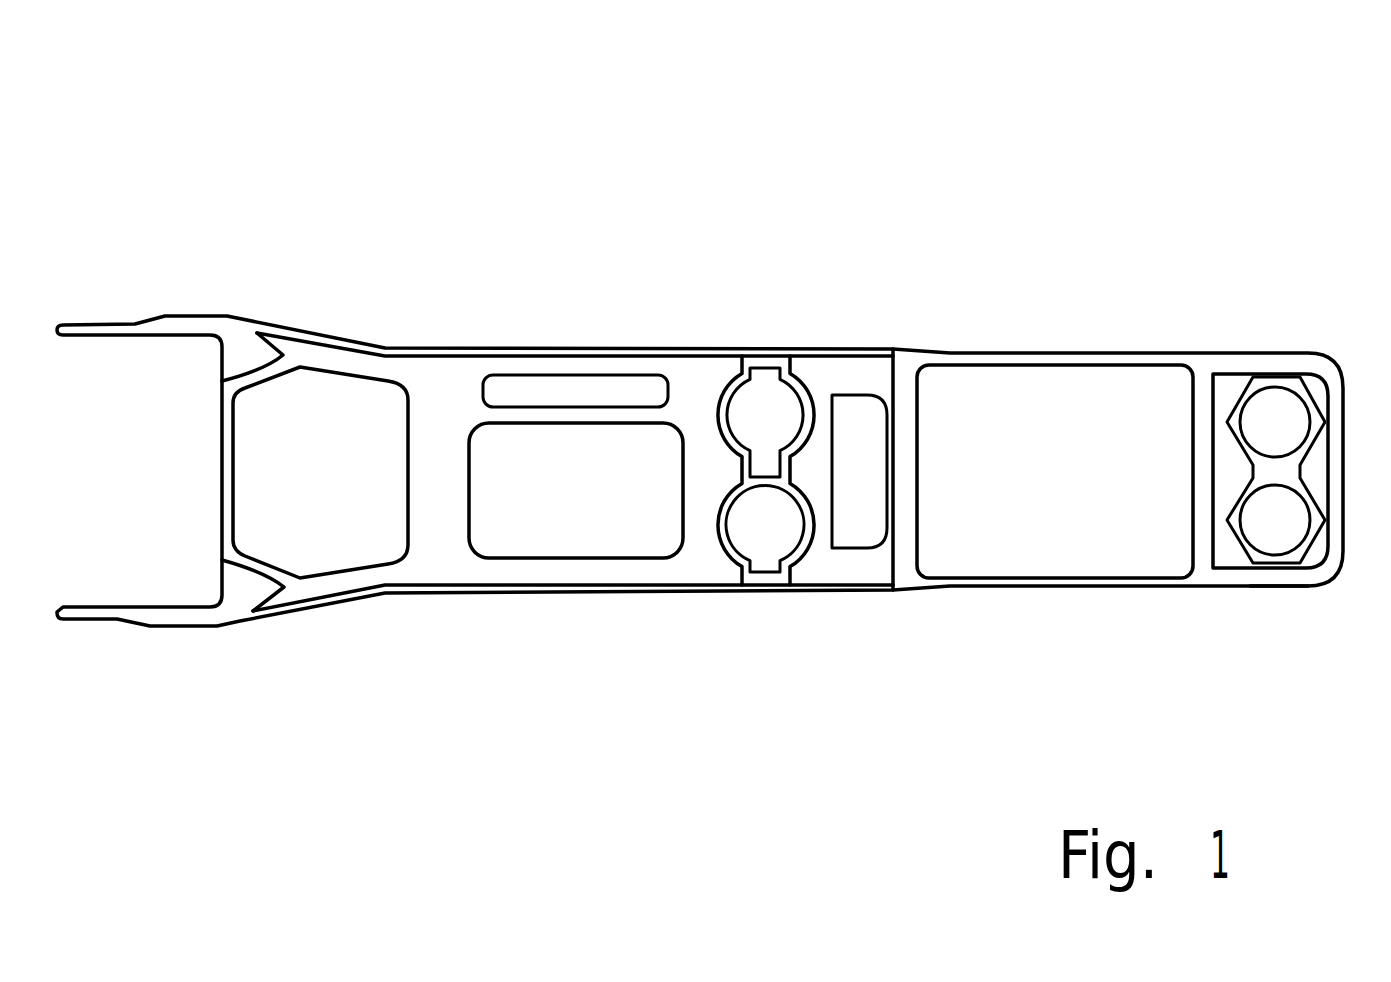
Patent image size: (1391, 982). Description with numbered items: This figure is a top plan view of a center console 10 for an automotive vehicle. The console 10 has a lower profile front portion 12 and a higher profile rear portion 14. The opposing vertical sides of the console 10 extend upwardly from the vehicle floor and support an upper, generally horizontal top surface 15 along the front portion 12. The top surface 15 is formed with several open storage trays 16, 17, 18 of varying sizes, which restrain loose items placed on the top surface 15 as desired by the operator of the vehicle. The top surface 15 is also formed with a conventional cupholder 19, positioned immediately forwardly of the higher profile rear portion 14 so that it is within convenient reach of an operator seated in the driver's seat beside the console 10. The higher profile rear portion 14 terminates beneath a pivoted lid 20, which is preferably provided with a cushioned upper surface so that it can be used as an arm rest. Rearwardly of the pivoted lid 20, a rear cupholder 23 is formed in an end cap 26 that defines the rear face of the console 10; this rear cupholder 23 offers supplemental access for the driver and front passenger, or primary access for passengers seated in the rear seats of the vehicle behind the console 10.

The center console 10 is at (1035, 178).
The front portion 12 is at (440, 636).
The rear portion 14 is at (1014, 636).
The top surface 15 is at (436, 380).
The storage tray 16 is at (325, 400).
The storage tray 17 is at (598, 552).
The storage tray 18 is at (602, 382).
The cupholder 19 is at (763, 338).
The pivoted lid 20 is at (1050, 425).
The rear cupholder 23 is at (1282, 350).
The end cap 26 is at (1280, 587).